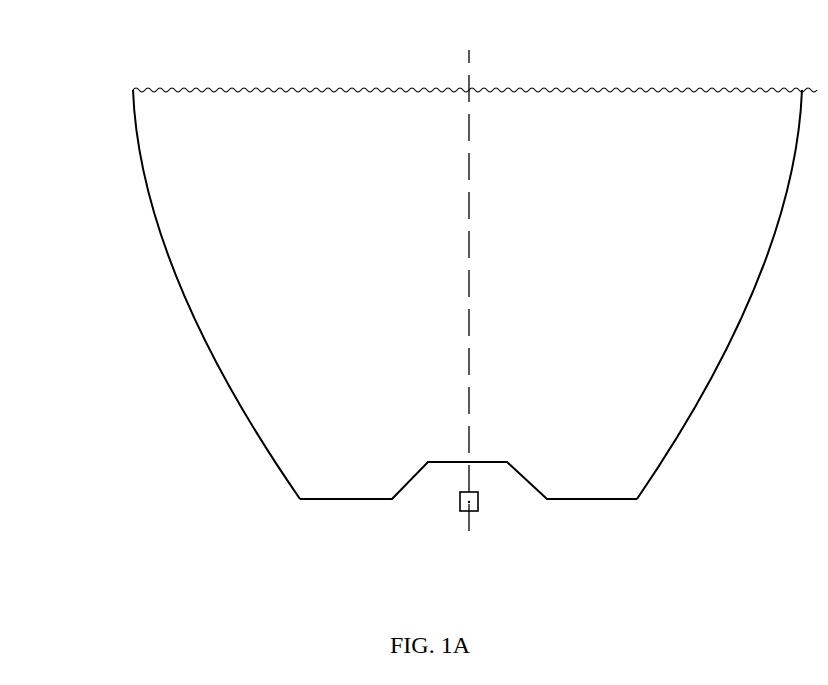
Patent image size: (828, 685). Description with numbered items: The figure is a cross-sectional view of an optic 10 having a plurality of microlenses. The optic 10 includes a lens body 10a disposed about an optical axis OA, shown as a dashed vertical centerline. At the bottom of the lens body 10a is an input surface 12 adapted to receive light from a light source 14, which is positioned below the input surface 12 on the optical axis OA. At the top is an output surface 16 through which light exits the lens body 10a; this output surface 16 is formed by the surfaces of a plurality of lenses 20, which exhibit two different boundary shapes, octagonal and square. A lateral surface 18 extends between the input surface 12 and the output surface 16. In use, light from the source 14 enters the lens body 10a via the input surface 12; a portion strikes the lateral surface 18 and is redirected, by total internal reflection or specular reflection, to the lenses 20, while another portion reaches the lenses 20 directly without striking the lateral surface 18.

The optic 10 is at (84, 194).
The lens body 10a is at (191, 310).
The input surface 12 is at (506, 462).
The light source 14 is at (479, 508).
The output surface 16 is at (475, 61).
The lateral surface 18 is at (718, 360).
The lenses 20 is at (228, 82).
The optical axis OA is at (469, 50).